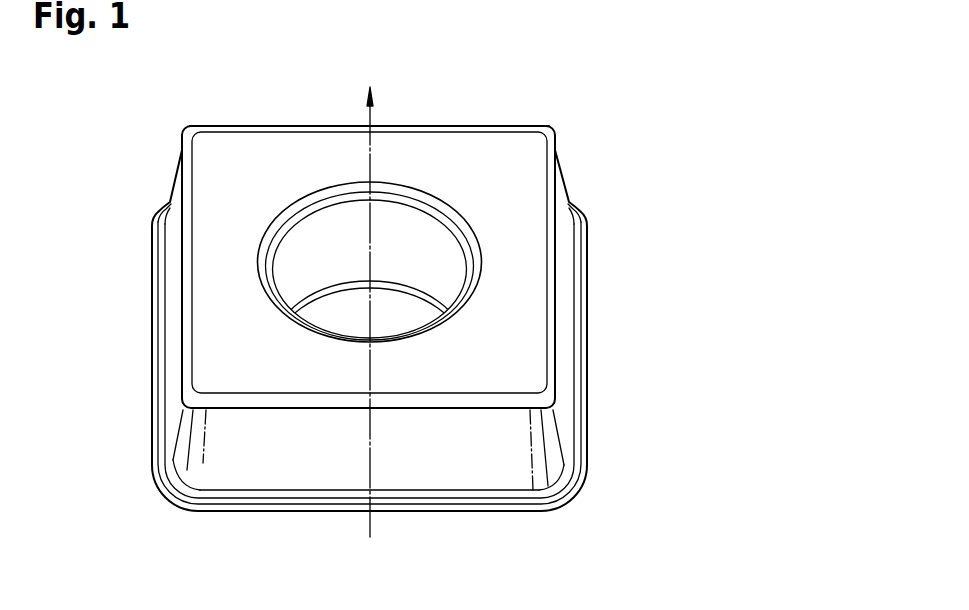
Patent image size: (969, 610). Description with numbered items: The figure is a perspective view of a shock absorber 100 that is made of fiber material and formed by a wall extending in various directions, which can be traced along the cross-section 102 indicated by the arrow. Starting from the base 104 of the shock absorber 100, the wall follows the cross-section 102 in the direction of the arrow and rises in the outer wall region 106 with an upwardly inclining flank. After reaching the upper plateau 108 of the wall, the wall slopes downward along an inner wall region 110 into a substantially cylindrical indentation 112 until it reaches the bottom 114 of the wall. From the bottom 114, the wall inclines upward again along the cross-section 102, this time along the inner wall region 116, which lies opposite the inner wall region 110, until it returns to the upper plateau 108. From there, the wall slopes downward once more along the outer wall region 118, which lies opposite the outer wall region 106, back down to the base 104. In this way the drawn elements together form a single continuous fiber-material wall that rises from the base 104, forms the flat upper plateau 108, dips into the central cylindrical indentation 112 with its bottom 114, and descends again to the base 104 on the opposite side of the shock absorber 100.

The shock absorber 100 is at (605, 170).
The cross-section 102 is at (377, 118).
The base 104 is at (498, 508).
The outer wall region 106 is at (403, 473).
The upper plateau 108 is at (531, 222).
The inner wall region 110 is at (377, 331).
The cylindrical indentation 112 is at (306, 210).
The bottom 114 is at (403, 312).
The inner wall region 116 is at (414, 238).
The outer wall region 118 is at (480, 126).